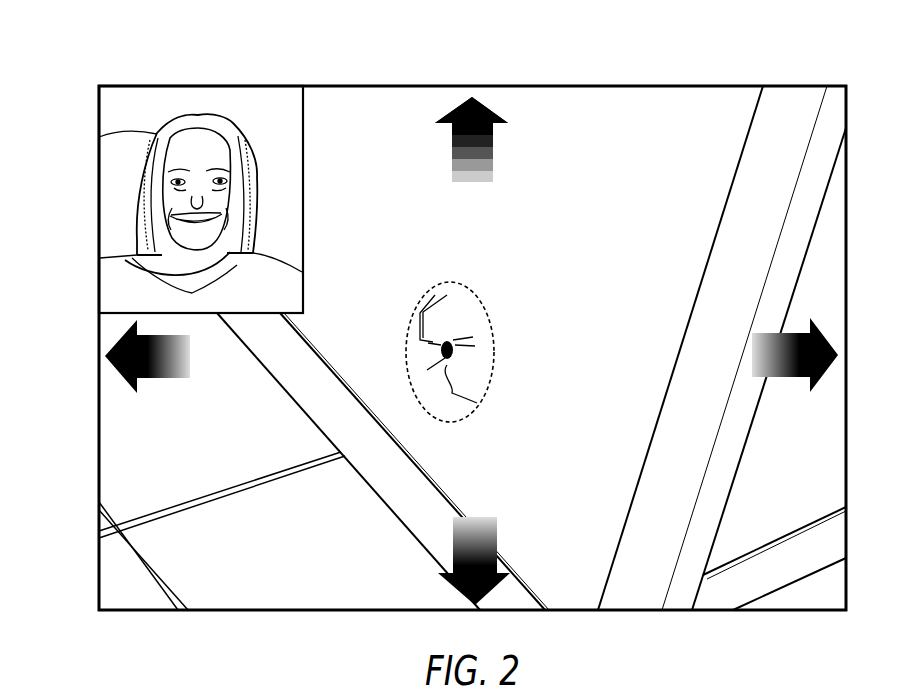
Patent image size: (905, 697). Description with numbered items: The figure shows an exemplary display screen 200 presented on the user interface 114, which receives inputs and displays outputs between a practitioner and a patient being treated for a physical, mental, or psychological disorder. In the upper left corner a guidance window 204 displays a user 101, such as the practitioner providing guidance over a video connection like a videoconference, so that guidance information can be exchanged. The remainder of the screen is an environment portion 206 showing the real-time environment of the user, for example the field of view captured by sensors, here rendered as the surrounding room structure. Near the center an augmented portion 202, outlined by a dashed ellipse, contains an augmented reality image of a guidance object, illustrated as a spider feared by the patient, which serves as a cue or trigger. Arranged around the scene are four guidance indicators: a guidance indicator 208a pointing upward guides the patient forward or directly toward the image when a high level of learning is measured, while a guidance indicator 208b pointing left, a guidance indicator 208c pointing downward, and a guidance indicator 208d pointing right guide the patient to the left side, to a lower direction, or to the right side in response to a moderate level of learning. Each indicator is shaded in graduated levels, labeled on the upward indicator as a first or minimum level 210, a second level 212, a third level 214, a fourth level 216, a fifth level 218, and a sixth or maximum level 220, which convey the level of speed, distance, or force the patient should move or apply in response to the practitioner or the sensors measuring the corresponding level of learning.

The display screen 200 is at (152, 56).
The user interface 114 is at (320, 85).
The user 101 is at (157, 134).
The guidance window 204 is at (115, 182).
The environment portion 206 is at (583, 458).
The augmented portion 202 is at (493, 357).
The guidance indicator 208a is at (452, 160).
The guidance indicator 208b is at (165, 378).
The guidance indicator 208c is at (497, 537).
The guidance indicator 208d is at (780, 377).
The first or minimum level 210 is at (493, 180).
The second level 212 is at (492, 170).
The third level 214 is at (492, 160).
The fourth level 216 is at (492, 148).
The fifth level 218 is at (492, 142).
The sixth or maximum level 220 is at (495, 110).